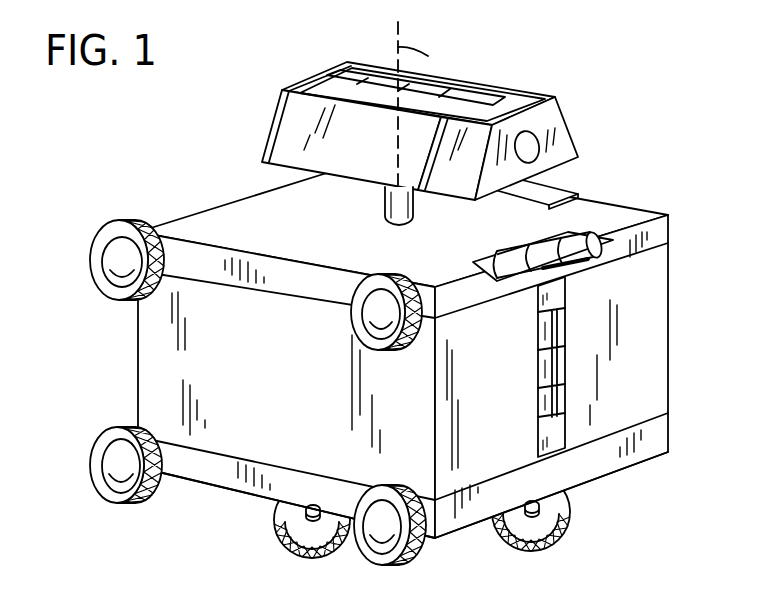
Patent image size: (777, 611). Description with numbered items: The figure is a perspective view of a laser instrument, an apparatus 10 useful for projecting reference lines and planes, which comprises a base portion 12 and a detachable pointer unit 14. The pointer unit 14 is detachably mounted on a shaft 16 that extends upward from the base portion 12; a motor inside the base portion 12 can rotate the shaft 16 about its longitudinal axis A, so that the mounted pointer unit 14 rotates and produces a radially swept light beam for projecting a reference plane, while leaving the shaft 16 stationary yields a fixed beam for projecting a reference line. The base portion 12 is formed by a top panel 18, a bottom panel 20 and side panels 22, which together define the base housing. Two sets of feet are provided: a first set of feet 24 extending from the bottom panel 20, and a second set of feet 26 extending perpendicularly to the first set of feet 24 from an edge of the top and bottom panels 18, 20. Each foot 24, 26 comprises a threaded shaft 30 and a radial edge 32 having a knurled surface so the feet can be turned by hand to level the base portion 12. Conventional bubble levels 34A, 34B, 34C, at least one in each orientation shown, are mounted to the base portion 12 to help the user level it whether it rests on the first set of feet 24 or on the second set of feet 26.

The apparatus 10 is at (610, 100).
The base portion 12 is at (398, 330).
The pointer unit 14 is at (290, 70).
The shaft 16 is at (385, 202).
The top panel 18 is at (612, 215).
The bottom panel 20 is at (648, 442).
The side panels 22 is at (640, 313).
The first set of feet 24 is at (273, 533).
The second set of feet 26 is at (117, 507).
The threaded shaft 30 is at (110, 480).
The radial edge 32 is at (133, 425).
The bubble level 34A is at (545, 193).
The bubble level 34B is at (608, 257).
The bubble level 34C is at (557, 377).